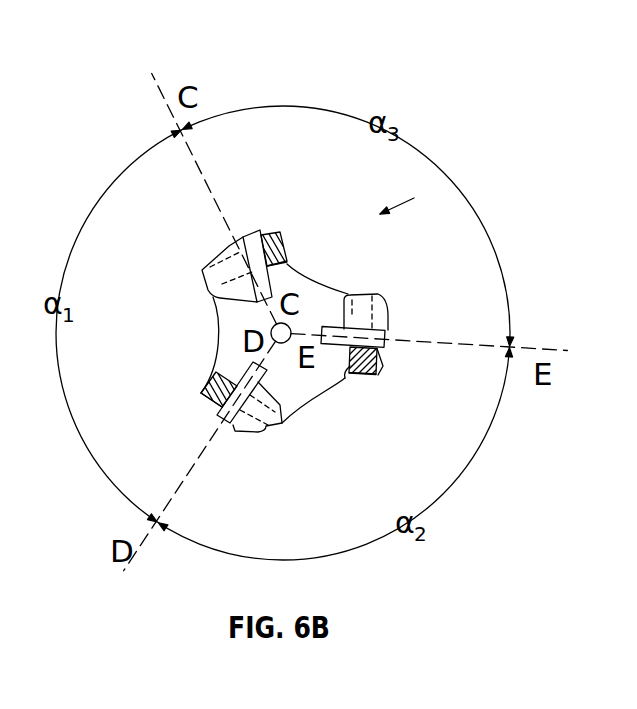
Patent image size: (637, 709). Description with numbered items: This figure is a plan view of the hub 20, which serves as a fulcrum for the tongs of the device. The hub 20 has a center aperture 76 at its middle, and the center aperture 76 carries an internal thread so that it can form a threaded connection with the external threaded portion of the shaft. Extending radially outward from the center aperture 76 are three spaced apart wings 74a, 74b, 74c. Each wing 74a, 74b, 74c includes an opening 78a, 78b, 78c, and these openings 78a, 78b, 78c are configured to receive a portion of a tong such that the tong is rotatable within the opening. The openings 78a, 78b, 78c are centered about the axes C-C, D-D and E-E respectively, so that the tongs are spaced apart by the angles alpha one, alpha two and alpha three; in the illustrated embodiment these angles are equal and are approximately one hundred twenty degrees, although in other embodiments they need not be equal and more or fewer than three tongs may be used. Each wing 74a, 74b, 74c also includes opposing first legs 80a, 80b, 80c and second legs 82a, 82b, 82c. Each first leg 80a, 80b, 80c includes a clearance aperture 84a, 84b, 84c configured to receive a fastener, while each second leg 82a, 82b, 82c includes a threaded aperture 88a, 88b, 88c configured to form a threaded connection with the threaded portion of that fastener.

The hub 20 is at (415, 196).
The wing 74a is at (235, 241).
The wing 74b is at (237, 436).
The wing 74c is at (394, 340).
The center aperture 76 is at (281, 343).
The opening 78a is at (241, 238).
The opening 78b is at (232, 425).
The opening 78c is at (386, 338).
The first leg 80a is at (204, 270).
The first leg 80b is at (283, 420).
The first leg 80c is at (388, 330).
The second leg 82a is at (262, 232).
The second leg 82b is at (201, 397).
The second leg 82c is at (378, 366).
The clearance aperture 84a is at (215, 298).
The clearance aperture 84b is at (258, 433).
The clearance aperture 84c is at (373, 295).
The threaded aperture 88a is at (288, 262).
The threaded aperture 88b is at (212, 410).
The threaded aperture 88c is at (357, 376).